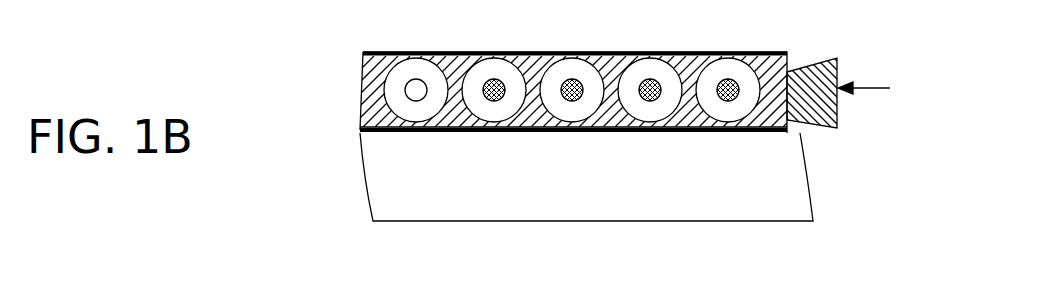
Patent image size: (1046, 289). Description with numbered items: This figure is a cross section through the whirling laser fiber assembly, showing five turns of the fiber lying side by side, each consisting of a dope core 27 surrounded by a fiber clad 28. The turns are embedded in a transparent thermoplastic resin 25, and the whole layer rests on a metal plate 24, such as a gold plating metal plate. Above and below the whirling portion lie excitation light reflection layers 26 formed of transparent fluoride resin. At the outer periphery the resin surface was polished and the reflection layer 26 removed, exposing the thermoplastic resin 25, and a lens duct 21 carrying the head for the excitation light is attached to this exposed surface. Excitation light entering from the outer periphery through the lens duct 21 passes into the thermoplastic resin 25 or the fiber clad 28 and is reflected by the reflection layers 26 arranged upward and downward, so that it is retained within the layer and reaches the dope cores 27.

The lens duct 21 is at (802, 72).
The metal plate 24 is at (383, 173).
The transparent thermoplastic resin 25 is at (457, 67).
The excitation light reflection layer 26 is at (527, 53).
The dope core 27 is at (413, 93).
The fiber clad 28 is at (392, 79).